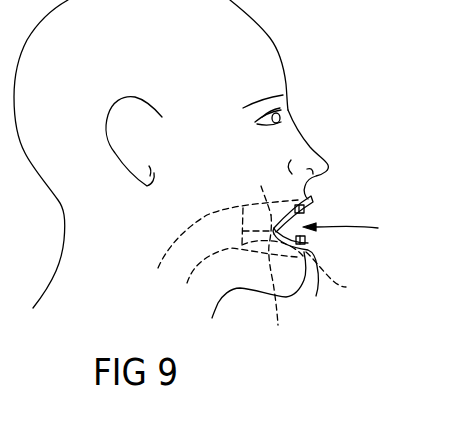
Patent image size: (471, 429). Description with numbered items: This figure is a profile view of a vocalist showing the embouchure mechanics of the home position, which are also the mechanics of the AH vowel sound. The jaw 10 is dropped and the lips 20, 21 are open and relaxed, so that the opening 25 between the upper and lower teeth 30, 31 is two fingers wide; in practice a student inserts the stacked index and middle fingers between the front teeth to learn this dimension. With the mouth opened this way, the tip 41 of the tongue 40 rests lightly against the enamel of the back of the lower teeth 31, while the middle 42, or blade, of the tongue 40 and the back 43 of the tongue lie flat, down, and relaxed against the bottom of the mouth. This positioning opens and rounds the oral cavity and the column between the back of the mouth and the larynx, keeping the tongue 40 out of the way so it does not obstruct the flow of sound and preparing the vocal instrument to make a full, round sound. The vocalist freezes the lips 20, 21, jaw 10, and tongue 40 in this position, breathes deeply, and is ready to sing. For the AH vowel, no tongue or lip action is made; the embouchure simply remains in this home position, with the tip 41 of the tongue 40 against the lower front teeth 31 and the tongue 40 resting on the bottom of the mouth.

The jaw 10 is at (258, 288).
The upper lip 20 is at (307, 199).
The lower lip 21 is at (300, 275).
The opening 25 is at (353, 229).
The upper teeth 30 is at (305, 205).
The lower teeth 31 is at (306, 240).
The tongue 40 is at (279, 285).
The tip of the tongue 41 is at (338, 277).
The middle of the tongue 42 is at (261, 188).
The back of the tongue 43 is at (232, 214).